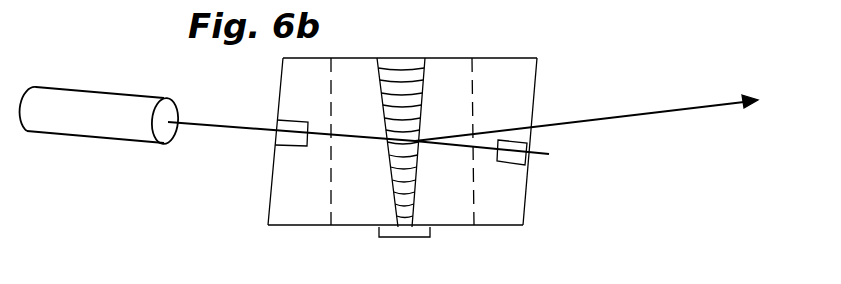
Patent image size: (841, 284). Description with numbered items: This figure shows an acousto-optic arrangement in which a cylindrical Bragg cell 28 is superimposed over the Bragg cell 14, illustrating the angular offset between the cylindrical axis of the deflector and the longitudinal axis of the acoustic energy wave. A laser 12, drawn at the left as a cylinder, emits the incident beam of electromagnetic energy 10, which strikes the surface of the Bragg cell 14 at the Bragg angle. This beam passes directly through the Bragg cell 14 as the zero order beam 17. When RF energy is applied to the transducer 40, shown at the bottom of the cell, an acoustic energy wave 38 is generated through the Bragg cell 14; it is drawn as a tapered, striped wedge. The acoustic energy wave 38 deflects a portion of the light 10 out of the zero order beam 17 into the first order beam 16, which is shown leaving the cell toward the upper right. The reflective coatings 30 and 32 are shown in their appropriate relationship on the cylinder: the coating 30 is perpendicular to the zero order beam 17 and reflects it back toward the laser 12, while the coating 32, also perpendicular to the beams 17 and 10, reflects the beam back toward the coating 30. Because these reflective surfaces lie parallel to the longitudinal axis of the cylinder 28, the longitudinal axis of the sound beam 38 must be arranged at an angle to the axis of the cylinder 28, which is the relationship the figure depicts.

The incident beam of electromagnetic energy 10 is at (212, 128).
The laser 12 is at (72, 137).
The Bragg cell 14 is at (455, 62).
The first order beam 16 is at (638, 110).
The zero order beam 17 is at (480, 150).
The cylindrical Bragg cell 28 is at (532, 88).
The reflective coating 30 is at (527, 148).
The reflective coating 32 is at (277, 138).
The acoustic energy wave 38 is at (390, 175).
The transducer 40 is at (419, 237).